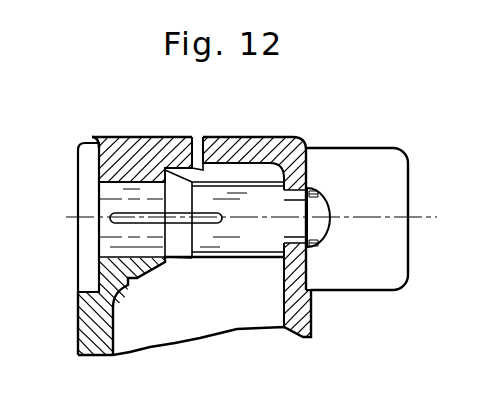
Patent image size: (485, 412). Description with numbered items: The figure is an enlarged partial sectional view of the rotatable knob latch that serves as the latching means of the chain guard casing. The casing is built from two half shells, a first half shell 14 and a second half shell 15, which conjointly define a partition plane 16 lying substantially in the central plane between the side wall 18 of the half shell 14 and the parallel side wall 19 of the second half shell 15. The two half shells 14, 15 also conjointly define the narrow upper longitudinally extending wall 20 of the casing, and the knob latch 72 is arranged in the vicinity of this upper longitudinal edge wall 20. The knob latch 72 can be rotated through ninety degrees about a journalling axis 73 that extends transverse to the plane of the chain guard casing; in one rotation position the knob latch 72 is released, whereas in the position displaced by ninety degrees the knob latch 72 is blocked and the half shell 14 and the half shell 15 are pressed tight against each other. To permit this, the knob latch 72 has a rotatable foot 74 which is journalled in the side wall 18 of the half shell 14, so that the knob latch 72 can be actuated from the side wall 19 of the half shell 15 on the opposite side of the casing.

The half shell 14 is at (96, 137).
The upper longitudinally extending wall 20 is at (158, 137).
The partition plane 16 is at (198, 135).
The second half shell 15 is at (283, 137).
The side wall 19 is at (305, 317).
The side wall 18 is at (87, 316).
The rotatable foot 74 is at (77, 193).
The journalling axis 73 is at (373, 217).
The knob latch 72 is at (381, 282).